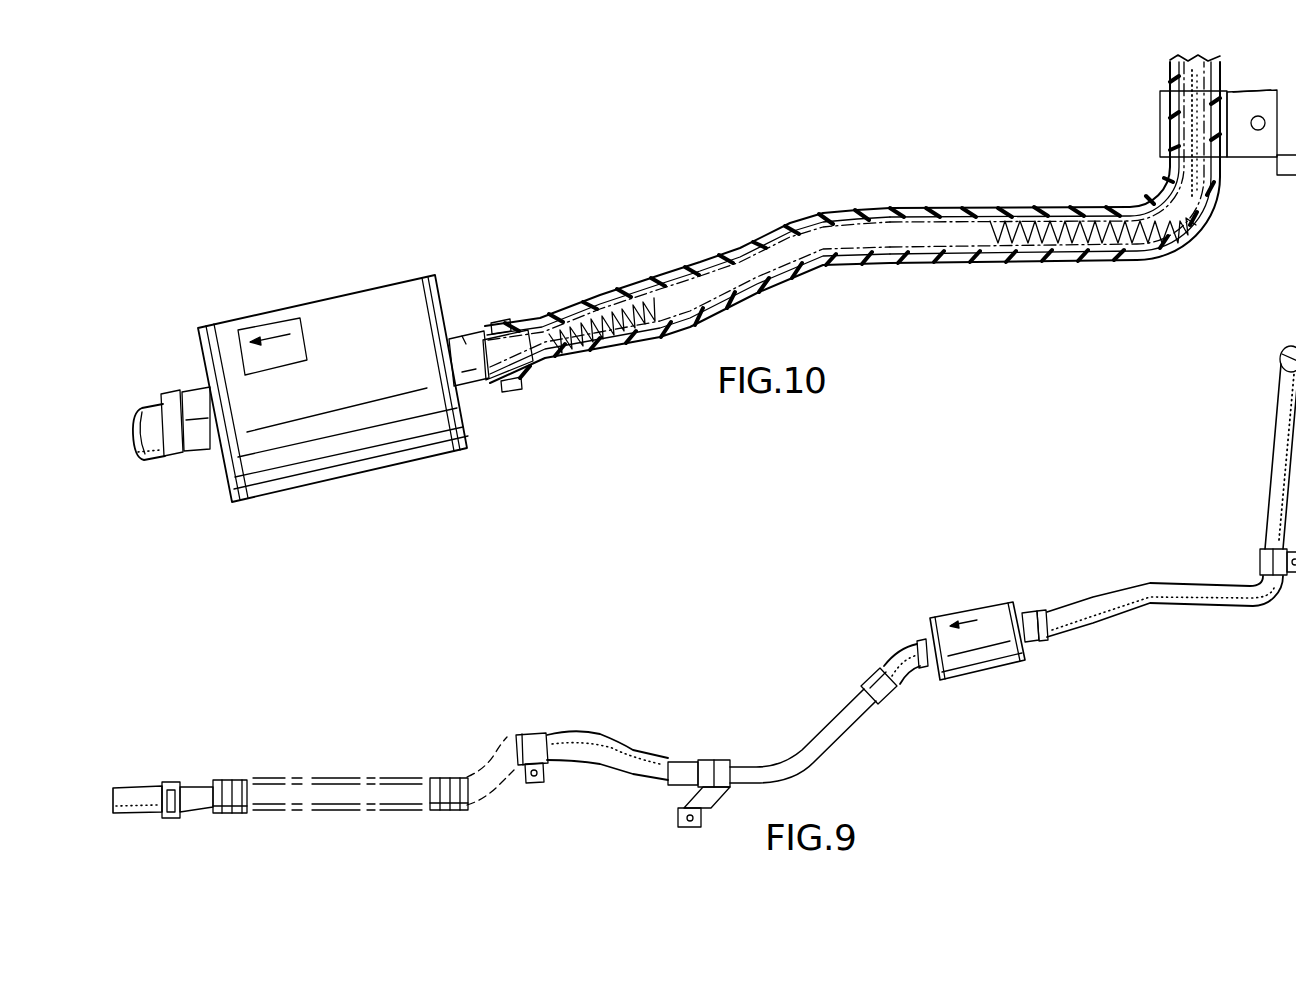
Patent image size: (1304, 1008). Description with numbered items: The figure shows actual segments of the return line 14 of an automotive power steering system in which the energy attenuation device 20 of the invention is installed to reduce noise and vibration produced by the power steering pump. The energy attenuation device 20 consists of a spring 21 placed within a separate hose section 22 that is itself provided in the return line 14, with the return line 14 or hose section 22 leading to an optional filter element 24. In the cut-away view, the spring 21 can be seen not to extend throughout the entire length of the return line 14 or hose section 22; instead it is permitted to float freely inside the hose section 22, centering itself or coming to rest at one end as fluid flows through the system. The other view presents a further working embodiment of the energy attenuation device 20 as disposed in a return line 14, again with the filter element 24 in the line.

In FIG. 9, the return line 14 is at (1162, 586).
In FIG. 10, the return line 14 is at (875, 212).
In FIG. 10, the energy attenuation device 20 is at (872, 224).
In FIG. 9, the spring 21 is at (328, 790).
In FIG. 10, the spring 21 is at (640, 324).
In FIG. 9, the hose section 22 is at (400, 780).
In FIG. 10, the hose section 22 is at (882, 162).
In FIG. 9, the filter element 24 is at (990, 612).
In FIG. 10, the filter element 24 is at (350, 297).